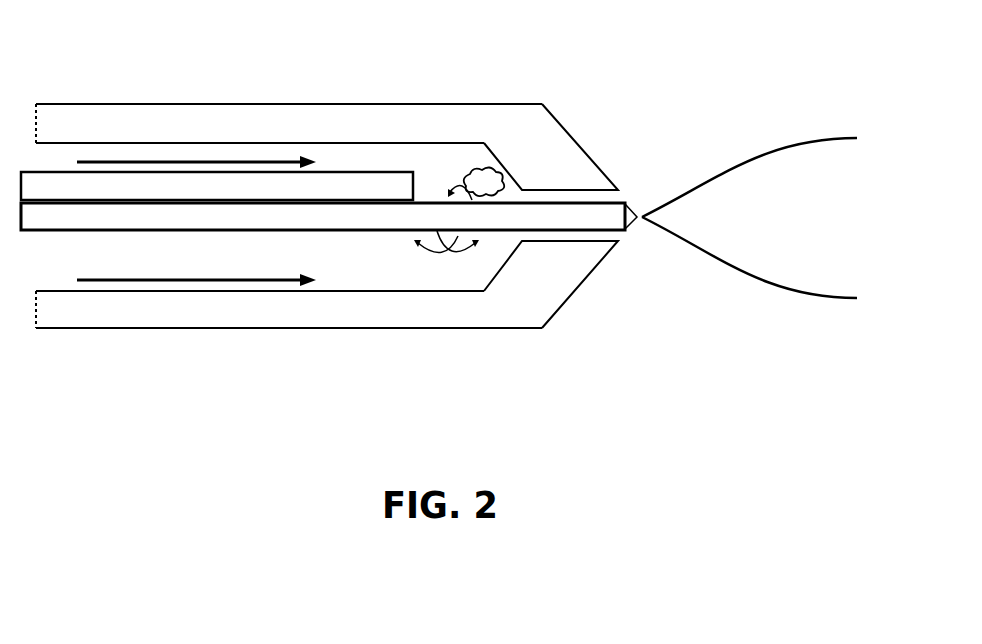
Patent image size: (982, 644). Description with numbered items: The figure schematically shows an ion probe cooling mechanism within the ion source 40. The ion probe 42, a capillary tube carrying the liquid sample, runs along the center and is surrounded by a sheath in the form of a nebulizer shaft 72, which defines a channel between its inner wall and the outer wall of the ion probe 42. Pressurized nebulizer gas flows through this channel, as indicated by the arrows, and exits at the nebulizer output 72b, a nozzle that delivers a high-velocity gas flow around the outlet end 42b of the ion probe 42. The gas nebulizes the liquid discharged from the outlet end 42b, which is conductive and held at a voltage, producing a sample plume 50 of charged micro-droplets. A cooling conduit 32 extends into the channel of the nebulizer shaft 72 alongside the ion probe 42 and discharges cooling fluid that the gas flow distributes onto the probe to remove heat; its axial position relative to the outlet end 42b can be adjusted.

The ion source 40 is at (233, 55).
The nebulizer shaft 72 is at (82, 103).
The nebulizer output 72b is at (625, 193).
The cooling conduit 32 is at (340, 172).
The ion probe 42 is at (322, 217).
The outlet end 42b is at (638, 202).
The sample plume 50 is at (749, 218).